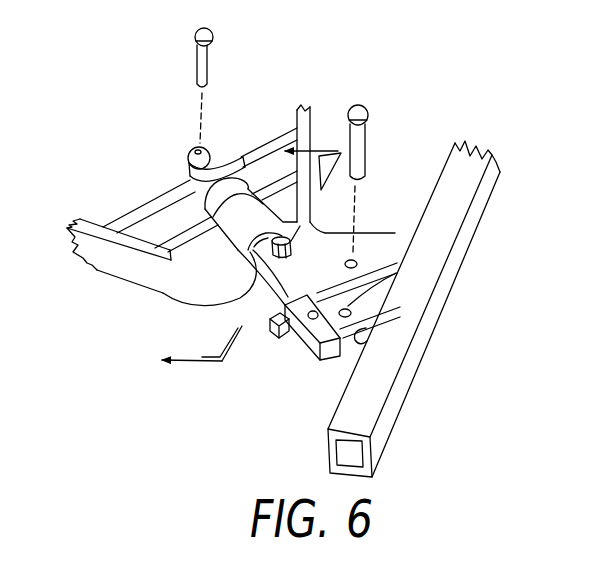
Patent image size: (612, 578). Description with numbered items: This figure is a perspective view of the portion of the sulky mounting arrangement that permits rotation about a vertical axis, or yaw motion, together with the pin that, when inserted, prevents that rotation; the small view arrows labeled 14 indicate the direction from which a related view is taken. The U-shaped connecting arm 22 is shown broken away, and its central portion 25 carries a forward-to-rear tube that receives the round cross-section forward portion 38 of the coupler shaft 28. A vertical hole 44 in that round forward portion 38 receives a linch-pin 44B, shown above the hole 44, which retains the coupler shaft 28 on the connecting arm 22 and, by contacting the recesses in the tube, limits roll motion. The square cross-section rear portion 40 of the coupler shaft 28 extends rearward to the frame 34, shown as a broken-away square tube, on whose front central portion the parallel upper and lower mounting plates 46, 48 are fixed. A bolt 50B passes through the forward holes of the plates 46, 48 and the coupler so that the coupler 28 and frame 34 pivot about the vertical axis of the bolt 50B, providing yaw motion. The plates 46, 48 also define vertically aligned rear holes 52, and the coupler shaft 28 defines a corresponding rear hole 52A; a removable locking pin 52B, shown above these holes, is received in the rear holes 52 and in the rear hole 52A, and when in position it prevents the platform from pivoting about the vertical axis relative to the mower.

The direction of view arrows 14 is at (251, 256).
The connecting arm 22 is at (109, 259).
The central portion 25 is at (188, 256).
The coupler shaft 28 is at (314, 372).
The frame 34 is at (489, 158).
The forward portion 38 is at (187, 160).
The rear portion 40 is at (308, 340).
The vertical hole 44 is at (206, 149).
The linch-pin 44B is at (207, 53).
The upper mounting plate 46 is at (384, 246).
The lower mounting plate 48 is at (345, 366).
The bolt 50B is at (314, 223).
The rear holes 52 is at (357, 266).
The rear hole 52A is at (307, 310).
The locking pin 52B is at (360, 102).